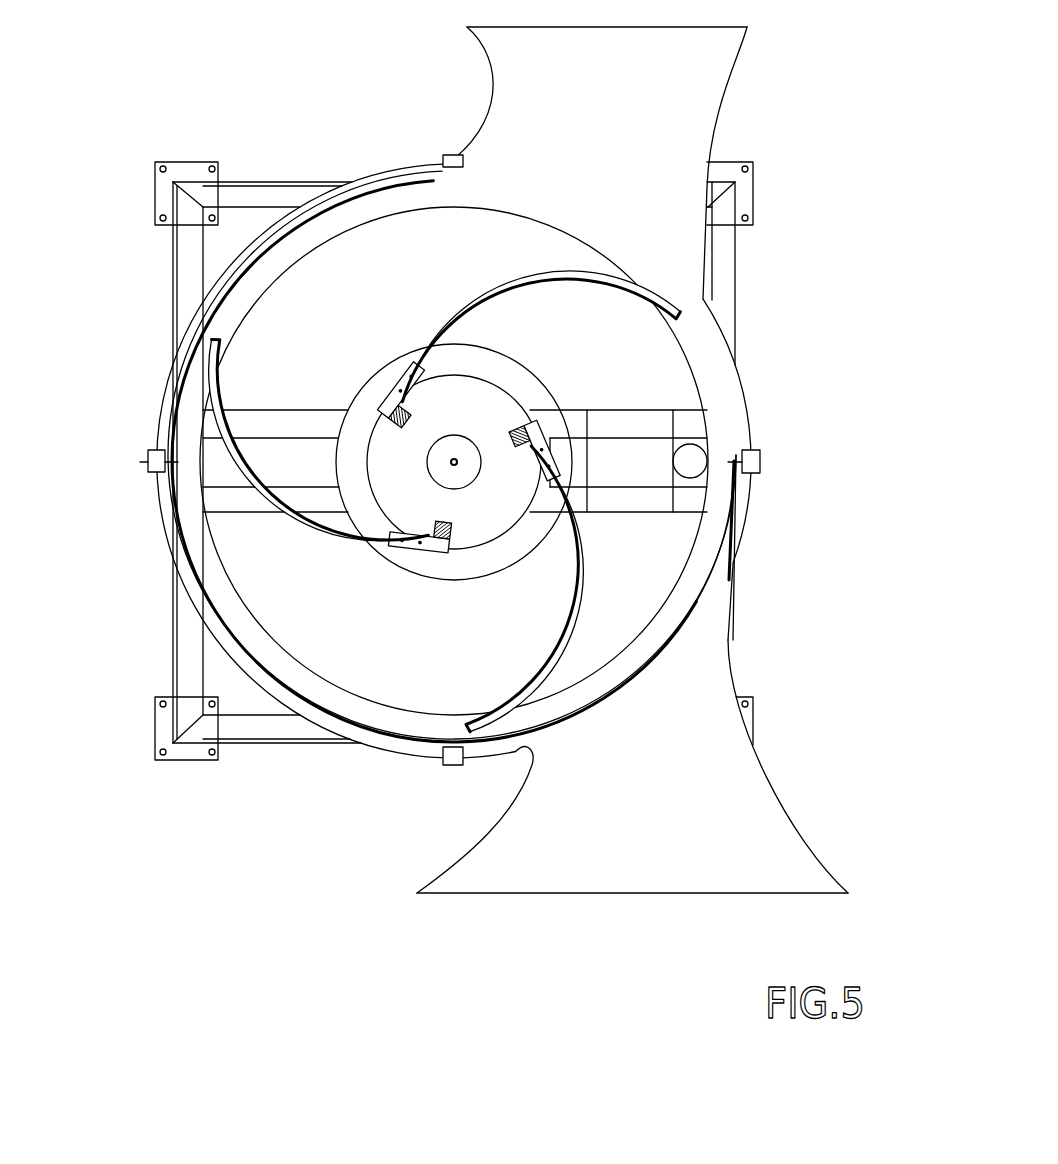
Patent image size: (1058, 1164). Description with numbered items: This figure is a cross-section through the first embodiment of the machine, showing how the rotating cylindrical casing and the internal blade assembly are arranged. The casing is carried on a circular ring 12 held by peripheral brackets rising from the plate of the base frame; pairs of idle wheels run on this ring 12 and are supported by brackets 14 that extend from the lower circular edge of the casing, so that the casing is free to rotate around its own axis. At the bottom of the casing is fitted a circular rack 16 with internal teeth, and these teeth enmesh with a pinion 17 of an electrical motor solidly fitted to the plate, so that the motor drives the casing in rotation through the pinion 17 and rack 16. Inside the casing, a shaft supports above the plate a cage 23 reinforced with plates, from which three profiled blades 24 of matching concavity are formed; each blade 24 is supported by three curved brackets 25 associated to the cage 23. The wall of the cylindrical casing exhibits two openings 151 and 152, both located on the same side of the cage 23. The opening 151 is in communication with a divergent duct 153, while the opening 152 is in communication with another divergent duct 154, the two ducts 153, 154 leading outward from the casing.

The circular ring 12 is at (738, 525).
The brackets 14 is at (442, 160).
The circular rack 16 is at (716, 388).
The pinion 17 is at (691, 461).
The cage 23 is at (523, 422).
The profiled blades 24 is at (547, 288).
The curved brackets 25 is at (503, 297).
The opening 151 is at (645, 712).
The opening 152 is at (548, 180).
The divergent duct 153 is at (578, 873).
The divergent duct 154 is at (710, 95).